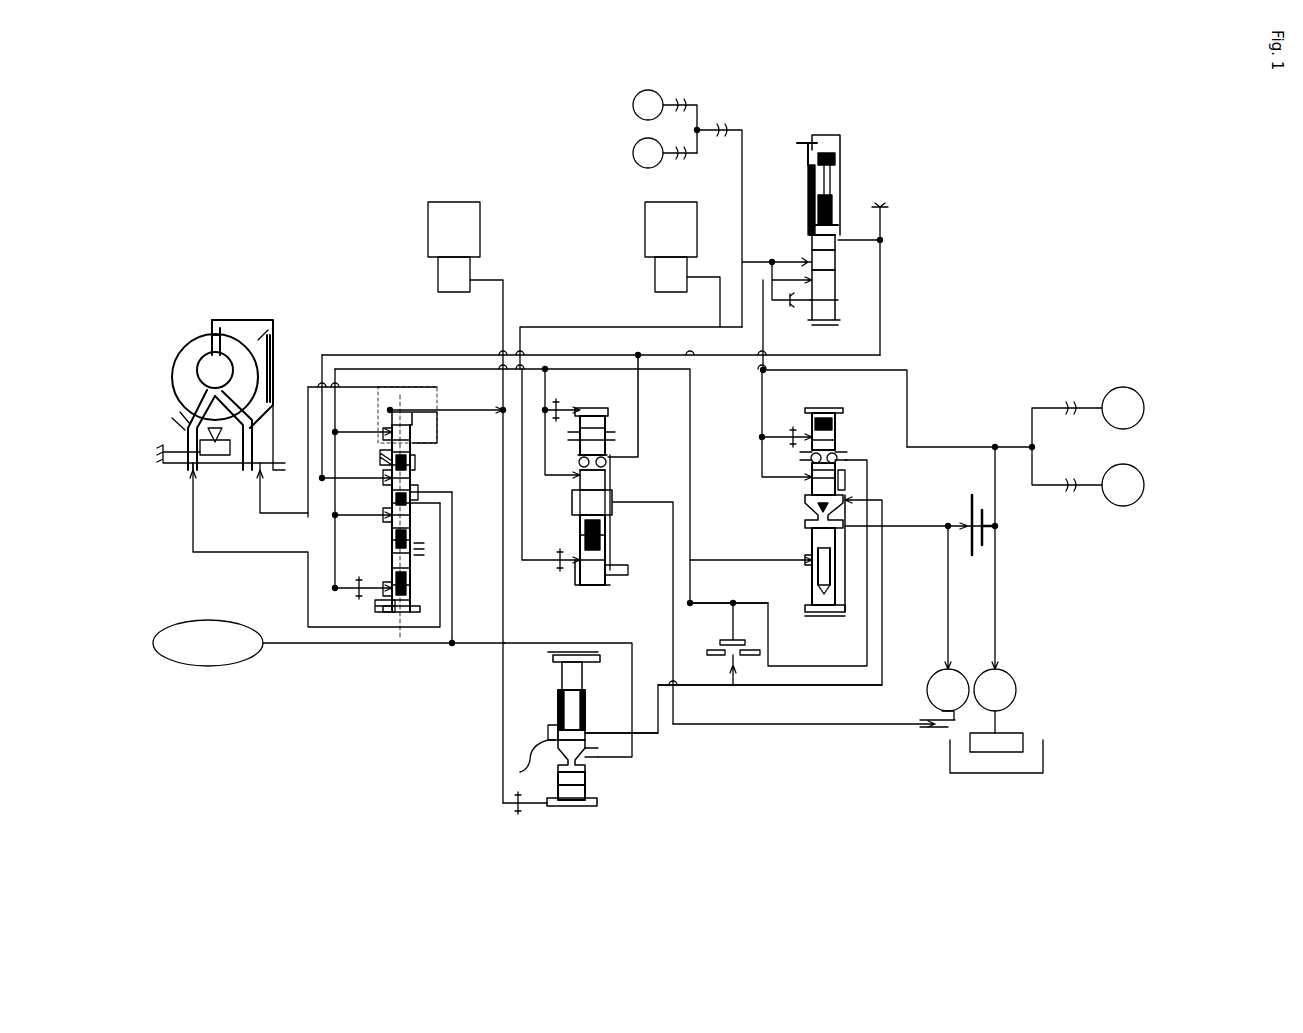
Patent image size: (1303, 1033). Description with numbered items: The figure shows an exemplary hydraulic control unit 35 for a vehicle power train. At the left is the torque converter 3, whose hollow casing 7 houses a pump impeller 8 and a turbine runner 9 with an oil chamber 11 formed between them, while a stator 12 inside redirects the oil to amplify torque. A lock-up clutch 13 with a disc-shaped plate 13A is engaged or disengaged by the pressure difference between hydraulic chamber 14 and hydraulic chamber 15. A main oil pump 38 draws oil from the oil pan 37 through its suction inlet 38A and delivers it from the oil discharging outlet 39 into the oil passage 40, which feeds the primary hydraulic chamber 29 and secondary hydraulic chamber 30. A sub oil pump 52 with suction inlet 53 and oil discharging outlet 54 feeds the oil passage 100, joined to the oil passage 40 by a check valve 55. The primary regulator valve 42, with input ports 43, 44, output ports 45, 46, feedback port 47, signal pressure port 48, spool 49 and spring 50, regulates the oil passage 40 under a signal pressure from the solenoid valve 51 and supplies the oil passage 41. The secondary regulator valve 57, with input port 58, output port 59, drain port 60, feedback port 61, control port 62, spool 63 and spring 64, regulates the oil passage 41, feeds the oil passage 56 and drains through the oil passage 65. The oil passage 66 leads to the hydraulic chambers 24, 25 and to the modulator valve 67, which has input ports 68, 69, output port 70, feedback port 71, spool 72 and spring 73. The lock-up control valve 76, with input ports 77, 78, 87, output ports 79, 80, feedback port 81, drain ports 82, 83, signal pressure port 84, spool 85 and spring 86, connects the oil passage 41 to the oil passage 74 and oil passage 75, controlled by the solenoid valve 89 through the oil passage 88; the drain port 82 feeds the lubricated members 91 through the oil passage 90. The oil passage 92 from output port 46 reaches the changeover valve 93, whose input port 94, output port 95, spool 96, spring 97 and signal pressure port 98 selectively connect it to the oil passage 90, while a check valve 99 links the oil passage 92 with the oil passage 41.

The torque converter 3 is at (223, 384).
The hollow casing 7 is at (248, 320).
The pump impeller 8 is at (180, 372).
The turbine runner 9 is at (232, 355).
The oil chamber 11 is at (210, 352).
The stator 12 is at (221, 459).
The lock-up clutch 13 is at (274, 345).
The plate 13A is at (273, 398).
The hydraulic chamber 14 is at (258, 340).
The hydraulic chamber 15 is at (308, 395).
The hydraulic chamber 24 is at (652, 95).
The hydraulic chamber 25 is at (633, 153).
The primary hydraulic chamber 29 is at (1122, 398).
The secondary hydraulic chamber 30 is at (1122, 505).
The hydraulic control unit 35 is at (366, 720).
The oil pan 37 is at (1047, 762).
The main oil pump 38 is at (1008, 685).
The suction inlet 38A is at (1003, 718).
The oil discharging outlet 39 is at (1003, 665).
The oil passage 40 is at (975, 447).
The oil passage 41 is at (748, 603).
The primary regulator valve 42 is at (778, 551).
The input port 43 is at (790, 480).
The input port 44 is at (838, 530).
The output port 45 is at (842, 465).
The output port 46 is at (850, 495).
The feedback port 47 is at (808, 430).
The signal pressure port 48 is at (805, 557).
The spool 49 is at (815, 480).
The spring 50 is at (812, 580).
The solenoid valve 51 is at (645, 228).
The sub oil pump 52 is at (935, 680).
The suction inlet 53 is at (935, 715).
The oil discharging outlet 54 is at (945, 660).
The check valve 55 is at (963, 510).
The oil passage 56 is at (690, 355).
The secondary regulator valve 57 is at (598, 539).
The input port 58 is at (575, 482).
The output port 59 is at (608, 455).
The drain port 60 is at (617, 507).
The feedback port 61 is at (574, 406).
The control port 62 is at (575, 575).
The spool 63 is at (597, 502).
The spring 64 is at (612, 552).
The oil passage 65 is at (820, 726).
The oil passage 66 is at (603, 320).
The modulator valve 67 is at (825, 243).
The input port 68 is at (805, 268).
The input port 69 is at (840, 252).
The output port 70 is at (808, 250).
The feedback port 71 is at (808, 308).
The spool 72 is at (842, 228).
The spring 73 is at (806, 170).
The oil passage 74 is at (305, 583).
The oil passage 75 is at (275, 515).
The lock-up control valve 76 is at (407, 508).
The input port 77 is at (388, 522).
The input port 78 is at (388, 430).
The output port 79 is at (420, 503).
The output port 80 is at (440, 425).
The feedback port 81 is at (385, 586).
The drain port 82 is at (425, 490).
The drain port 83 is at (380, 460).
The signal pressure port 84 is at (420, 410).
The spool 85 is at (412, 458).
The spring 86 is at (410, 558).
The input port 87 is at (385, 485).
The oil passage 88 is at (500, 326).
The solenoid valve 89 is at (480, 228).
The oil passage 90 is at (452, 645).
The lubricated members 91 is at (214, 660).
The oil passage 92 is at (770, 686).
The changeover valve 93 is at (577, 737).
The input port 94 is at (595, 730).
The output port 95 is at (592, 760).
The spool 96 is at (533, 759).
The spring 97 is at (560, 697).
The signal pressure port 98 is at (540, 808).
The check valve 99 is at (716, 634).
The oil passage 100 is at (920, 535).